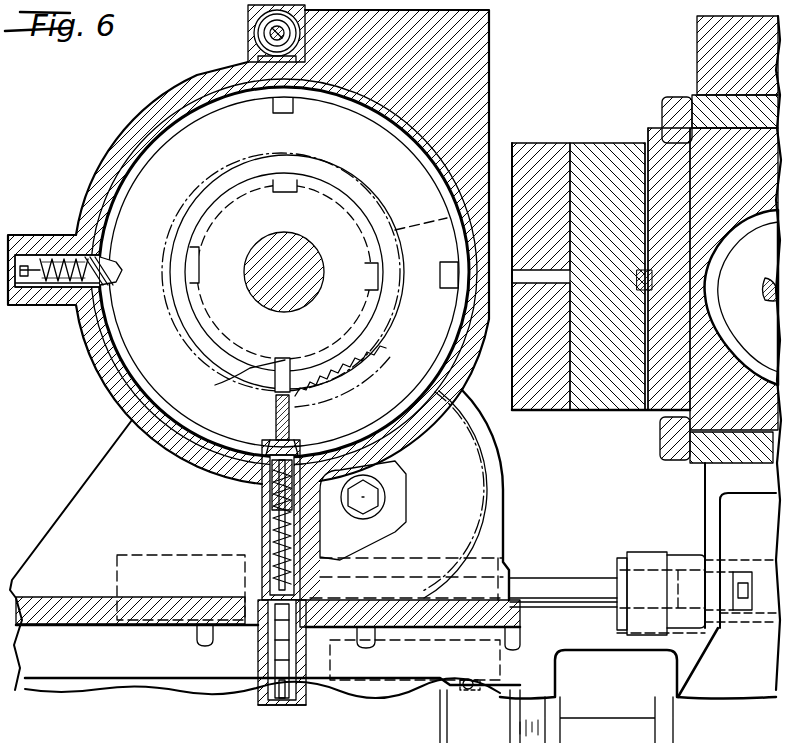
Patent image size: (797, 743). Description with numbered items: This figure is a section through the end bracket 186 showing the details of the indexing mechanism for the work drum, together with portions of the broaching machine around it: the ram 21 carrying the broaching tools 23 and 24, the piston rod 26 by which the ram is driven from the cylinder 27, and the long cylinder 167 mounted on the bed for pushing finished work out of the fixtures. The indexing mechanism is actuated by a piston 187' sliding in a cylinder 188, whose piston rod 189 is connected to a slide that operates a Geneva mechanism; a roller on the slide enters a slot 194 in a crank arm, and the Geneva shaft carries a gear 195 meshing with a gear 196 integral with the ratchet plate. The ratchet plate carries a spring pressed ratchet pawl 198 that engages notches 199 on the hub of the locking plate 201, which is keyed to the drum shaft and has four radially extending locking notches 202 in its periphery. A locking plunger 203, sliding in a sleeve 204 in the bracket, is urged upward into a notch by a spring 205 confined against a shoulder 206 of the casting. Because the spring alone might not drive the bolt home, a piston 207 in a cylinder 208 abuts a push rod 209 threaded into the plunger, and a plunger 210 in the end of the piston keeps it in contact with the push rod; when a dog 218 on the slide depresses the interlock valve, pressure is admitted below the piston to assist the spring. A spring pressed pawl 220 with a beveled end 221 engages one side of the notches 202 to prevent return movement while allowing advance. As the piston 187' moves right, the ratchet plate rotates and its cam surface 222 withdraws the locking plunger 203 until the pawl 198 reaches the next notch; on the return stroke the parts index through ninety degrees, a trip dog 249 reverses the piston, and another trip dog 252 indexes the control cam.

The long cylinder 167 is at (250, 28).
The end bracket 186 is at (200, 74).
The locking plate 201 is at (176, 130).
The locking notches 202 is at (293, 105).
The spring pressed pawl 220 is at (96, 235).
The beveled end 221 is at (108, 262).
The notches 199 is at (200, 250).
The gear 196 is at (362, 368).
The gear 195 is at (382, 388).
The ratchet pawl 198 is at (222, 384).
The cam surface 222 is at (252, 455).
The locking plunger 203 is at (265, 480).
The sleeve 204 is at (274, 504).
The spring 205 is at (278, 522).
The shoulder 206 is at (250, 582).
The piston 207 is at (276, 647).
The cylinder 208 is at (280, 667).
The plunger 210 is at (262, 702).
The slot 194 is at (325, 552).
The push rod 209 is at (320, 596).
The trip dog 249 is at (345, 692).
The dog 218 is at (448, 662).
The trip dog 252 is at (485, 674).
The broaching tool 23 is at (560, 160).
The ram 21 is at (637, 162).
The broaching tool 24 is at (525, 412).
The cylinder 27 is at (728, 240).
The piston rod 26 is at (764, 288).
The piston rod 189 is at (576, 590).
The cylinder 188 is at (756, 572).
The piston 187' is at (638, 603).